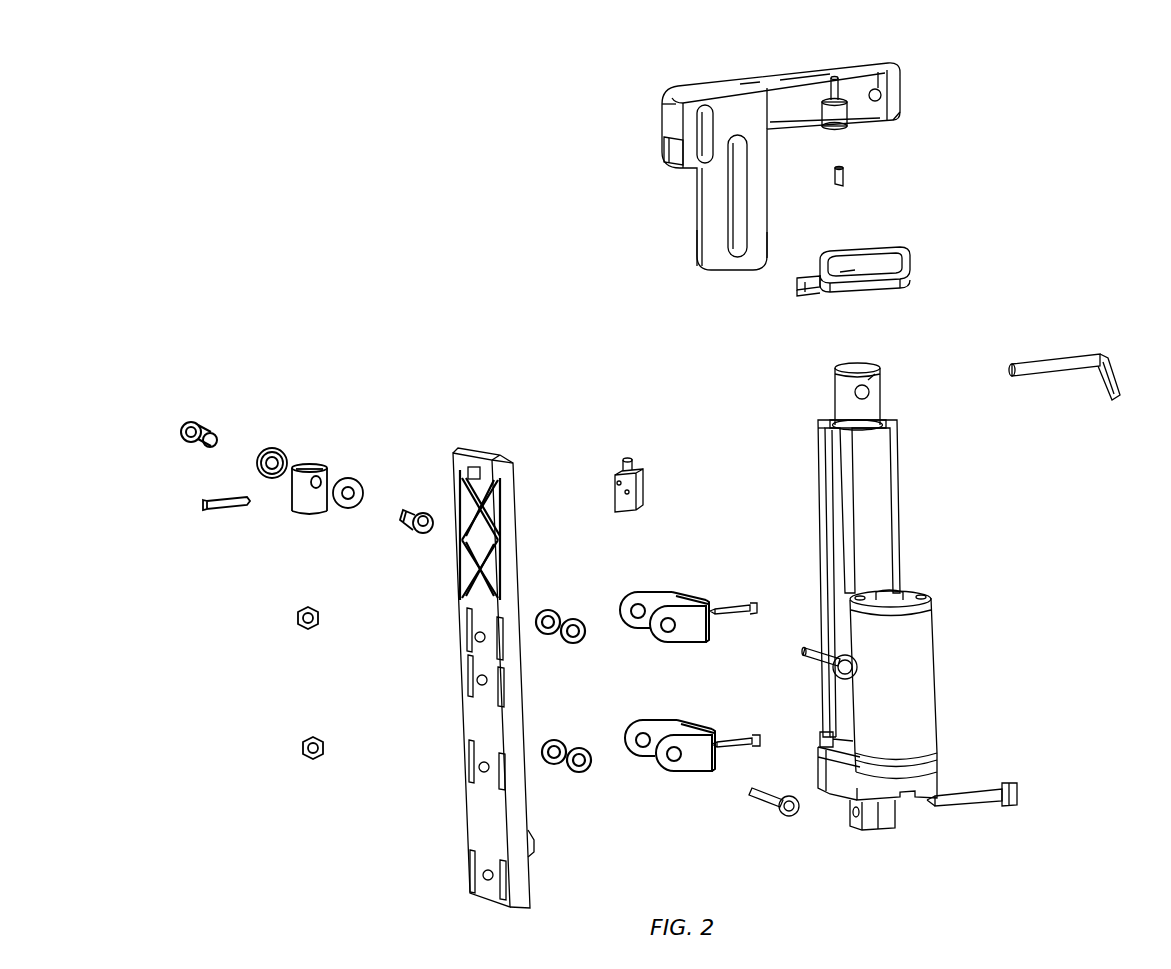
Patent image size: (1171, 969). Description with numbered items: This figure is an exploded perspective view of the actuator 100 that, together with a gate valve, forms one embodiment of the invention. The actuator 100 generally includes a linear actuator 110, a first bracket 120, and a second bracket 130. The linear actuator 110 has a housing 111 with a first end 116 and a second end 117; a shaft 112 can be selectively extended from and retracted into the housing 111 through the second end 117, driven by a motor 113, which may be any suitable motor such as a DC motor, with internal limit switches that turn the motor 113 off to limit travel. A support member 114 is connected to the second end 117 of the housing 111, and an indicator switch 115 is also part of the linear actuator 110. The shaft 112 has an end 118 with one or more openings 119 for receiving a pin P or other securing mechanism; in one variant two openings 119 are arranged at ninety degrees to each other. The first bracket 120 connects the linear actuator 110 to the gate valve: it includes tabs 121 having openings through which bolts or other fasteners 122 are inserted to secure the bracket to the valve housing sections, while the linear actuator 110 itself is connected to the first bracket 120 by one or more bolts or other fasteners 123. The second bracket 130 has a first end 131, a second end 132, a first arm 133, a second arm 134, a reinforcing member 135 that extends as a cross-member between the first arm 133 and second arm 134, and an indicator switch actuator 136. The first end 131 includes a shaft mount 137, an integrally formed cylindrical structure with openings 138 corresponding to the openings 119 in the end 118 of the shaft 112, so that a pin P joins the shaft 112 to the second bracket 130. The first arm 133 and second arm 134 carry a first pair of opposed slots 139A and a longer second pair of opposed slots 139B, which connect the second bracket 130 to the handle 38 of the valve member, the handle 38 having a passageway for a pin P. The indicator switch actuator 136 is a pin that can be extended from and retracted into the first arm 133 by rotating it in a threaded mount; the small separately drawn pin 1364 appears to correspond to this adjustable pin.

The actuator 100 is at (940, 845).
The linear actuator 110 is at (930, 574).
The housing 111 is at (900, 480).
The shaft 112 is at (873, 410).
The motor 113 is at (917, 640).
The support member 114 is at (915, 262).
The indicator switch 115 is at (650, 478).
The first end 116 is at (816, 743).
The second end 117 is at (886, 421).
The end 118 is at (852, 370).
The openings 119 is at (870, 380).
The first bracket 120 is at (612, 808).
The tabs 121 is at (670, 592).
The fasteners 122 is at (803, 653).
The fasteners 123 is at (968, 797).
The second bracket 130 is at (716, 183).
The first end 131 is at (888, 76).
The second end 132 is at (668, 112).
The first arm 133 is at (775, 123).
The second arm 134 is at (755, 83).
The reinforcing member 135 is at (800, 80).
The indicator switch actuator 136 is at (836, 115).
The shaft mount 137 is at (895, 120).
The openings 138 is at (878, 88).
The first pair of opposed slots 139A is at (683, 147).
The second pair of opposed slots 139B is at (737, 237).
The pin 1364 is at (845, 190).
The handle 38 is at (332, 462).
The pin P is at (1090, 332).